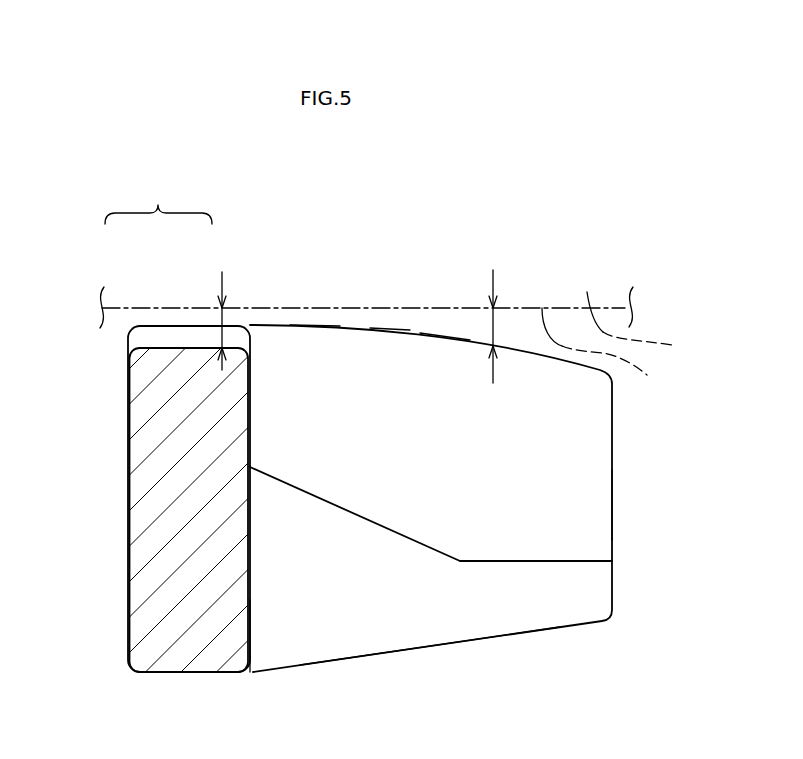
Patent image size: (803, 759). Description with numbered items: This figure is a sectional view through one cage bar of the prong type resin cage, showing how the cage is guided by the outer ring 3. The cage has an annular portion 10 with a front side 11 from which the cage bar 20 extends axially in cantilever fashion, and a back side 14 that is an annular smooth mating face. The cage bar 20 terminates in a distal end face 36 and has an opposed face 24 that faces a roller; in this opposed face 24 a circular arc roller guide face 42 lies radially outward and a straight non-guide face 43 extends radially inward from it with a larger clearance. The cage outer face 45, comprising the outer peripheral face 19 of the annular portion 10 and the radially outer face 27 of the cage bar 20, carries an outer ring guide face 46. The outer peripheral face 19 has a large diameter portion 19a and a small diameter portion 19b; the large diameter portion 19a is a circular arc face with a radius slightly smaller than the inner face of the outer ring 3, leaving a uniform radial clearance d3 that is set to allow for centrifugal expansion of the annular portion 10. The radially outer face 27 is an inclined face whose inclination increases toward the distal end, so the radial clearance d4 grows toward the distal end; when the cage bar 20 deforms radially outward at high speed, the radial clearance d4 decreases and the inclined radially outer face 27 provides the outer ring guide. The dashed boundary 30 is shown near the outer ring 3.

The outer ring 3 is at (637, 326).
The annular portion 10 is at (145, 410).
The front side 11 is at (250, 622).
The back side 14 is at (128, 505).
The outer peripheral face 19 is at (158, 203).
The large diameter portion 19a is at (195, 326).
The small diameter portion 19b is at (167, 347).
The cage bar 20 is at (614, 460).
The opposed face 24 is at (506, 601).
The radially outer face 27 is at (440, 336).
The boundary line 30 is at (607, 353).
The distal end face 36 is at (612, 535).
The roller guide face 42 is at (557, 494).
The non-guide face 43 is at (398, 622).
The cage outer face 45 is at (318, 326).
The outer ring guide face 46 is at (388, 324).
The radial clearance d3 is at (222, 275).
The radial clearance d4 is at (494, 275).